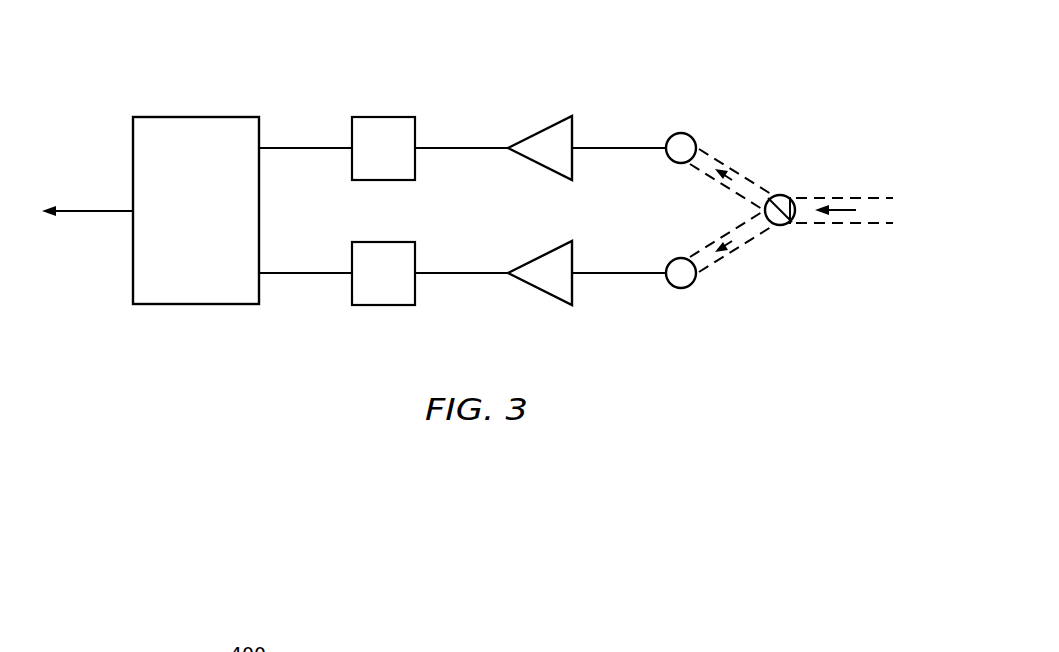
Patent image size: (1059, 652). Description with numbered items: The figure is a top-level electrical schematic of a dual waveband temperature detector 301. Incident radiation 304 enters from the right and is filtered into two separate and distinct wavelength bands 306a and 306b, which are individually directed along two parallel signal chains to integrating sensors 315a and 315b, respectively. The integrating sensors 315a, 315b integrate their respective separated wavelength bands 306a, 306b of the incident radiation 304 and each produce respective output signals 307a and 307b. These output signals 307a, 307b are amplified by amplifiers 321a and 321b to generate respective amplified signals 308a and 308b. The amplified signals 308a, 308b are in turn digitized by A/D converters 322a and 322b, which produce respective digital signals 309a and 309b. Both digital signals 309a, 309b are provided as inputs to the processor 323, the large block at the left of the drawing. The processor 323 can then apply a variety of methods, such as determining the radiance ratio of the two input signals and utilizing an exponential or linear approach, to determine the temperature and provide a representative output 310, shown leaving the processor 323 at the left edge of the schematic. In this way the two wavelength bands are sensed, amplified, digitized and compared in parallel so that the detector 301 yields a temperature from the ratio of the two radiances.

The dual waveband temperature detector 301 is at (467, 203).
The incident radiation 304 is at (836, 209).
The first separated wavelength band 306a is at (752, 160).
The second separated wavelength band 306b is at (733, 245).
The first output signal 307a is at (620, 147).
The second output signal 307b is at (620, 276).
The first amplified signal 308a is at (460, 147).
The second amplified signal 308b is at (460, 275).
The first digital signal 309a is at (305, 147).
The second digital signal 309b is at (307, 275).
The representative output 310 is at (87, 210).
The first integrating sensor 315a is at (683, 133).
The second integrating sensor 315b is at (683, 288).
The first amplifier 321a is at (540, 132).
The second amplifier 321b is at (540, 290).
The first A/D converter 322a is at (383, 117).
The second A/D converter 322b is at (383, 305).
The processor 323 is at (214, 226).